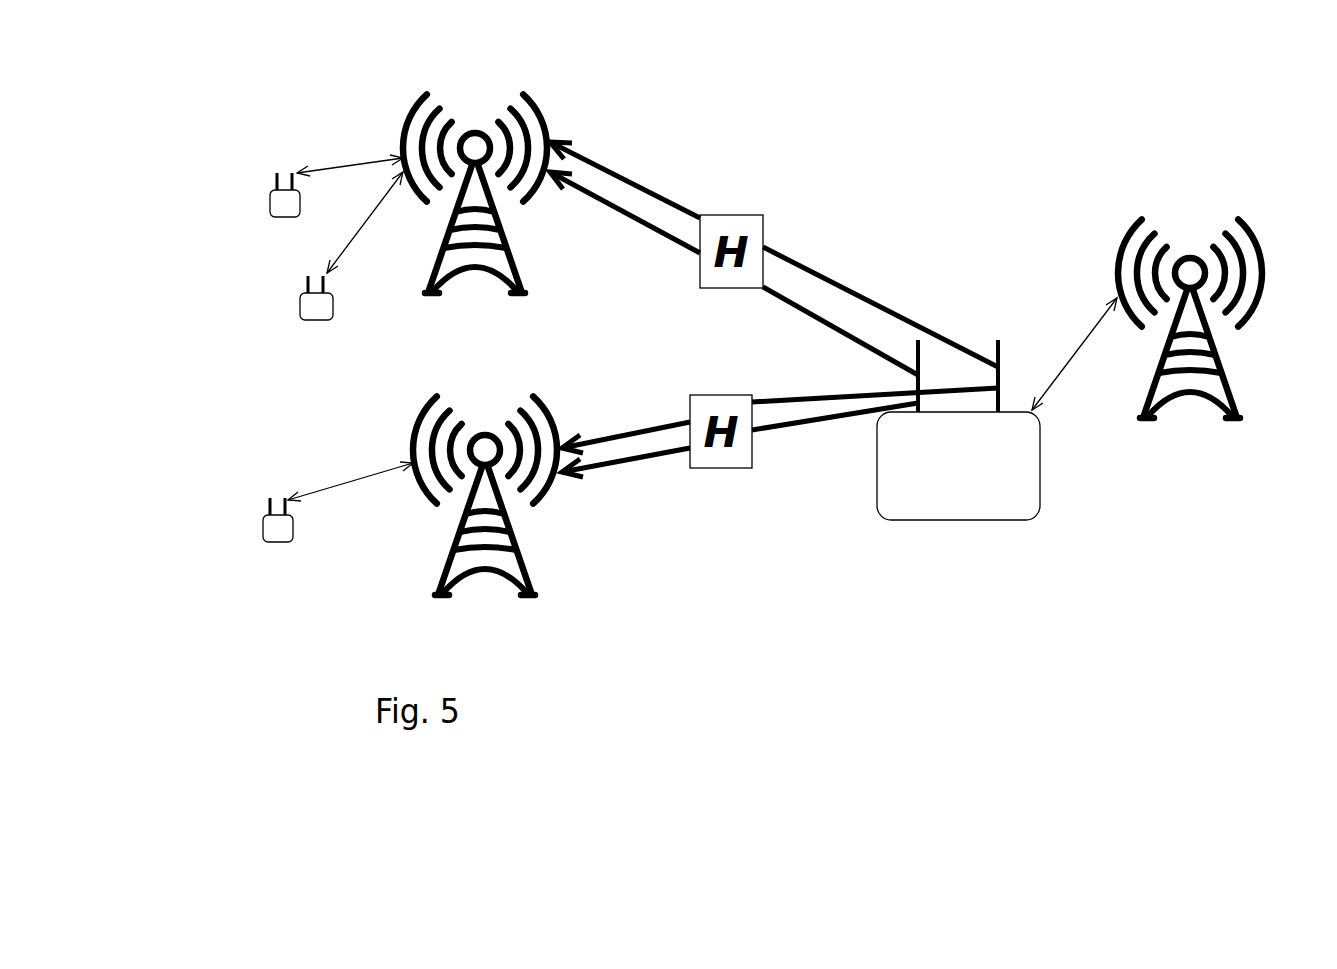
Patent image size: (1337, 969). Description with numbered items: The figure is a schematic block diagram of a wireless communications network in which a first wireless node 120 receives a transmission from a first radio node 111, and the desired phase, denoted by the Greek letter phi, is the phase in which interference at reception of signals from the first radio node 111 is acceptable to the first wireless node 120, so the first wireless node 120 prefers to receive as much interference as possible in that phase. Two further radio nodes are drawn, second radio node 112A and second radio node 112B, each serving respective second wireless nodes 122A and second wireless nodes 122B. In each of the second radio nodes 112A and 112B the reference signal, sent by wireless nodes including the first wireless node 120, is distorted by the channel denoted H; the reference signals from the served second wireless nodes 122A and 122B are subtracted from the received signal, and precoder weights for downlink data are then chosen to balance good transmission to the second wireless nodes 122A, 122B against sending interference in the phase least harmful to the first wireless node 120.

The first radio node 111 is at (1217, 367).
The second radio node 112A is at (453, 232).
The second radio node 112B is at (458, 550).
The first wireless node 120 is at (877, 488).
The second wireless nodes 122A is at (270, 207).
The second wireless nodes 122B is at (282, 523).